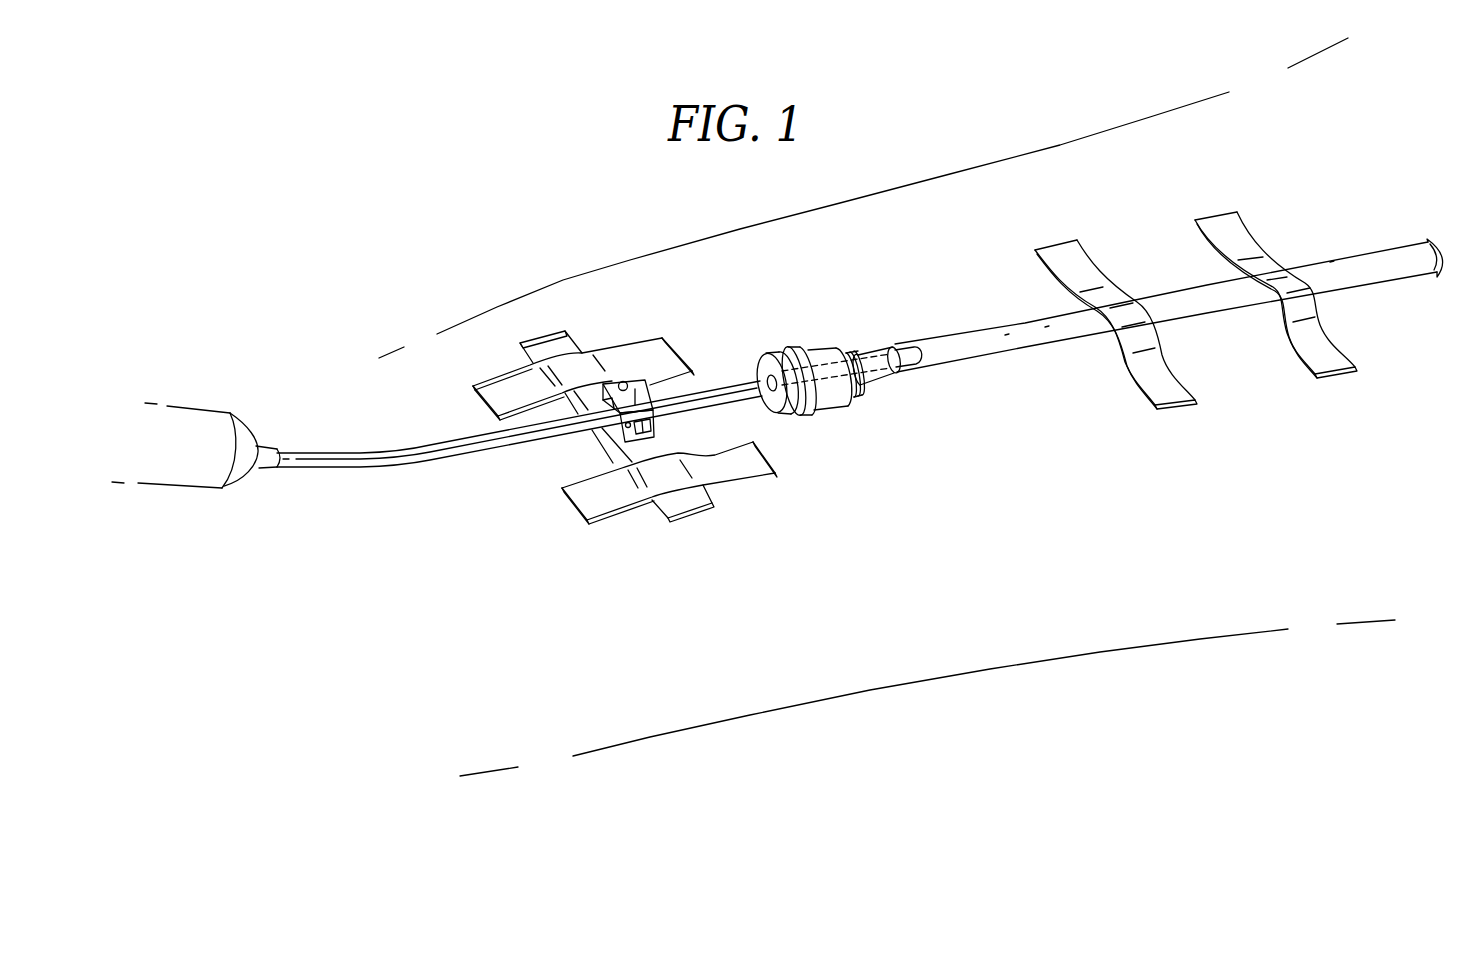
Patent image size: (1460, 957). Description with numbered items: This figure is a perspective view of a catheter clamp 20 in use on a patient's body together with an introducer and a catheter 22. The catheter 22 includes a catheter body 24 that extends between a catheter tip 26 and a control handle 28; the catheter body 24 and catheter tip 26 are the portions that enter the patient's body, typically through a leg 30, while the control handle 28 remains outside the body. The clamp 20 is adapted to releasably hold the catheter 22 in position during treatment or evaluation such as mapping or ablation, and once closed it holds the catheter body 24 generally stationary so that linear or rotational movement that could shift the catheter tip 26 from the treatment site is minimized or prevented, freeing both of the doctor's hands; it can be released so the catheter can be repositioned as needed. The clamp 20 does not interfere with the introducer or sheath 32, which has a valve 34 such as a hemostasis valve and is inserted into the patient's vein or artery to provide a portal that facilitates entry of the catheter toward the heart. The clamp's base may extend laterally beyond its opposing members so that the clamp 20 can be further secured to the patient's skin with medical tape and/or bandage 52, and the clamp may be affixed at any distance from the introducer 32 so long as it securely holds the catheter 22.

The catheter clamp 20 is at (630, 385).
The catheter 22 is at (243, 426).
The catheter body 24 is at (352, 474).
The catheter tip 26 is at (905, 353).
The control handle 28 is at (180, 490).
The leg 30 is at (958, 170).
The introducer or sheath 32 is at (1008, 355).
The valve 34 is at (827, 398).
The medical tape and/or bandage 52 is at (630, 497).